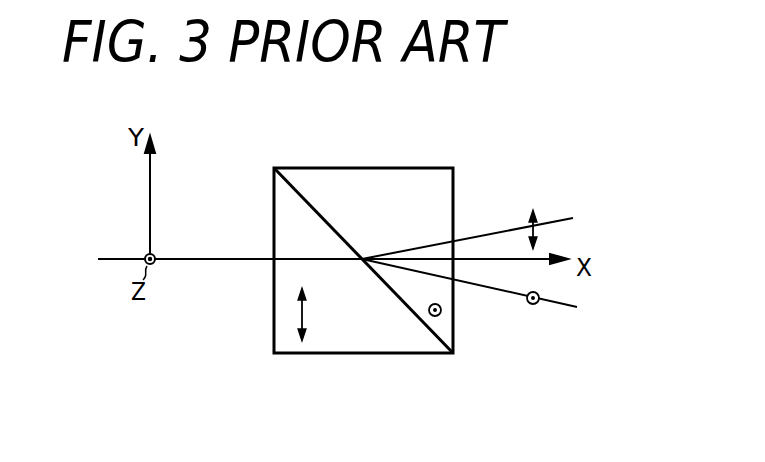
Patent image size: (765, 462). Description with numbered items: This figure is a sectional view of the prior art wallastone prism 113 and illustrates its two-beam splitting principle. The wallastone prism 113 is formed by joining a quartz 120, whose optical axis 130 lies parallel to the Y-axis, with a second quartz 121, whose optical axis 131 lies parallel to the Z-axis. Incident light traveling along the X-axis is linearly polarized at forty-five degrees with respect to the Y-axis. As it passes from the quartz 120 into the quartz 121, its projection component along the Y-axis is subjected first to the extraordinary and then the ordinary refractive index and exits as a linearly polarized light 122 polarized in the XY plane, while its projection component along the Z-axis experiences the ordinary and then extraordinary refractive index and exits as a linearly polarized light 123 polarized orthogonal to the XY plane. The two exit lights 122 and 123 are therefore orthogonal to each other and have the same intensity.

The wallastone prism 113 is at (376, 306).
The quartz 120 is at (405, 343).
The quartz 121 is at (380, 401).
The linearly polarized light 122 is at (549, 224).
The linearly polarized light 123 is at (560, 305).
The optical axis 130 is at (304, 322).
The optical axis 131 is at (441, 310).